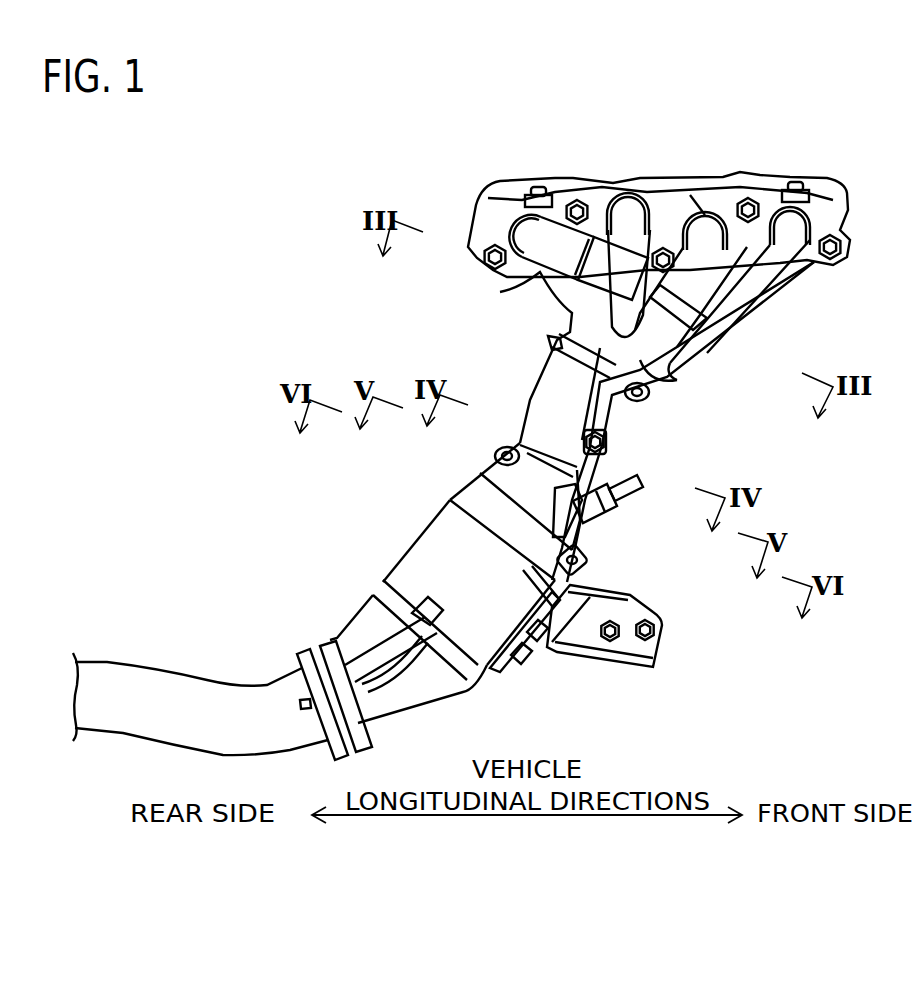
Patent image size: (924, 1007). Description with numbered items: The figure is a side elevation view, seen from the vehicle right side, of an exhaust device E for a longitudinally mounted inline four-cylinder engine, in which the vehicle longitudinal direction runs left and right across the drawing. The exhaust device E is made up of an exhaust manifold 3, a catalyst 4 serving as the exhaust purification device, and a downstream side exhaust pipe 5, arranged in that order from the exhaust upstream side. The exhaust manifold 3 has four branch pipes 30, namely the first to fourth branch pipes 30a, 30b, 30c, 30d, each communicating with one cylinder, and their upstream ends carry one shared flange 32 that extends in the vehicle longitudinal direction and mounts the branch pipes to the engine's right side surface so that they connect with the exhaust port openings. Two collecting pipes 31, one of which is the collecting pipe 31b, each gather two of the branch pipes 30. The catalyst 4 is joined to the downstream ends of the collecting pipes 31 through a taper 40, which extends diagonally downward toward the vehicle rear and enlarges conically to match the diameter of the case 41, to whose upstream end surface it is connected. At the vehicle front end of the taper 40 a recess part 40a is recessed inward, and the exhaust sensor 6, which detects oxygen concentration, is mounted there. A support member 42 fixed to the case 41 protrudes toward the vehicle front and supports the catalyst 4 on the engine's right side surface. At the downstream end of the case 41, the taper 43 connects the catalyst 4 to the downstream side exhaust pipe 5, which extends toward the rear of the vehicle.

The exhaust device E is at (420, 150).
The branch pipes 30 is at (820, 100).
The flange 32 is at (695, 200).
The first branch pipe 30a is at (817, 264).
The second branch pipe 30b is at (735, 277).
The third branch pipe 30c is at (628, 207).
The fourth branch pipe 30d is at (536, 243).
The exhaust manifold 3 is at (557, 340).
The collecting pipes 31 is at (686, 395).
The collecting pipe 31b is at (600, 437).
The taper 40 is at (497, 462).
The recess part 40a is at (578, 528).
The exhaust sensor 6 is at (590, 502).
The catalyst 4 is at (410, 545).
The taper 43 is at (440, 694).
The downstream side exhaust pipe 5 is at (177, 668).
The case 41 is at (532, 660).
The support member 42 is at (614, 665).